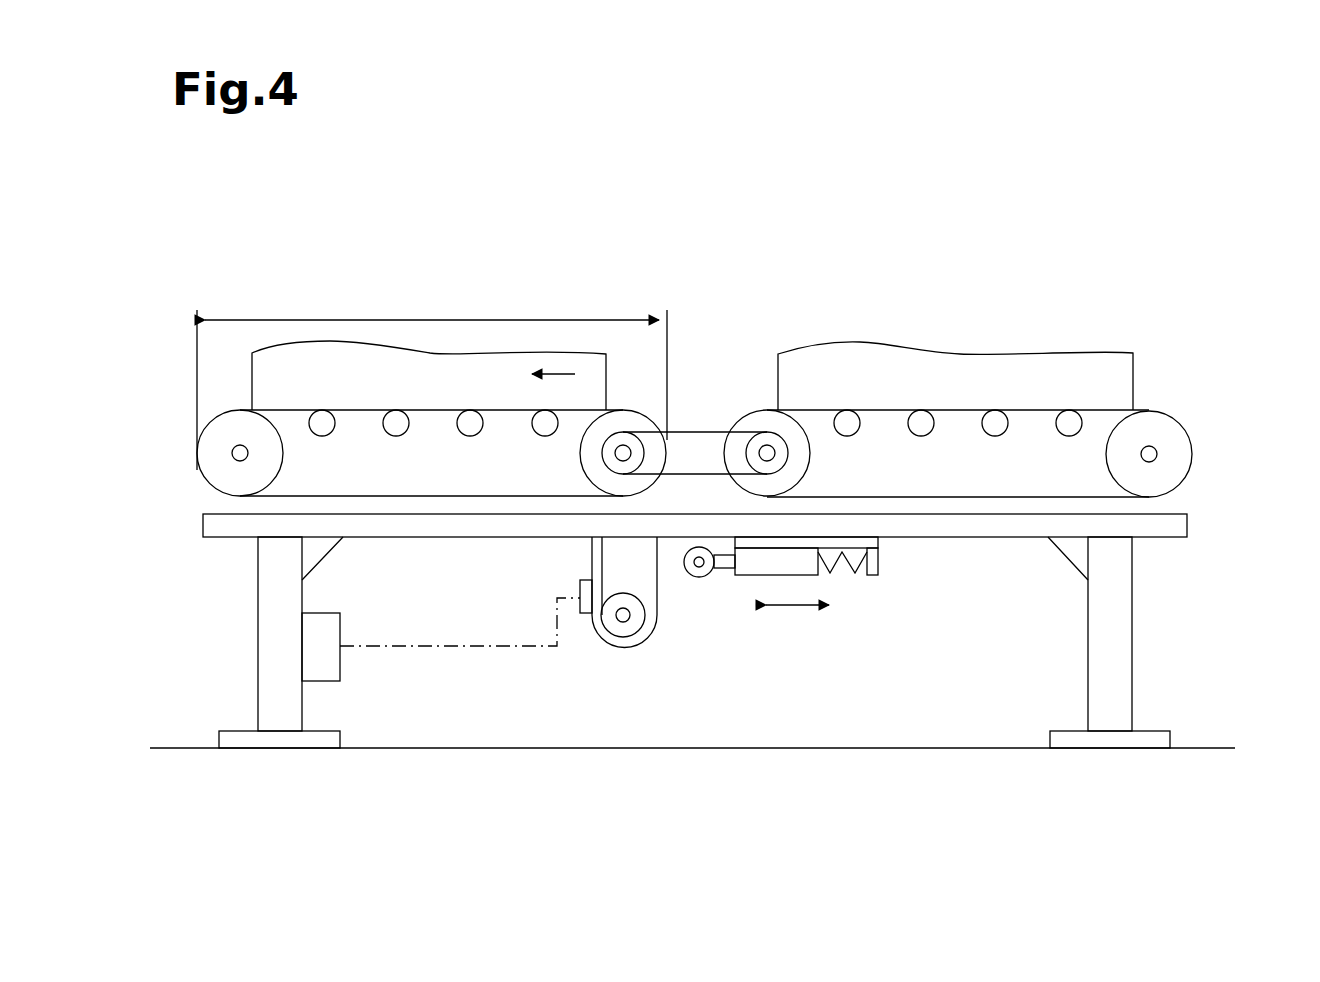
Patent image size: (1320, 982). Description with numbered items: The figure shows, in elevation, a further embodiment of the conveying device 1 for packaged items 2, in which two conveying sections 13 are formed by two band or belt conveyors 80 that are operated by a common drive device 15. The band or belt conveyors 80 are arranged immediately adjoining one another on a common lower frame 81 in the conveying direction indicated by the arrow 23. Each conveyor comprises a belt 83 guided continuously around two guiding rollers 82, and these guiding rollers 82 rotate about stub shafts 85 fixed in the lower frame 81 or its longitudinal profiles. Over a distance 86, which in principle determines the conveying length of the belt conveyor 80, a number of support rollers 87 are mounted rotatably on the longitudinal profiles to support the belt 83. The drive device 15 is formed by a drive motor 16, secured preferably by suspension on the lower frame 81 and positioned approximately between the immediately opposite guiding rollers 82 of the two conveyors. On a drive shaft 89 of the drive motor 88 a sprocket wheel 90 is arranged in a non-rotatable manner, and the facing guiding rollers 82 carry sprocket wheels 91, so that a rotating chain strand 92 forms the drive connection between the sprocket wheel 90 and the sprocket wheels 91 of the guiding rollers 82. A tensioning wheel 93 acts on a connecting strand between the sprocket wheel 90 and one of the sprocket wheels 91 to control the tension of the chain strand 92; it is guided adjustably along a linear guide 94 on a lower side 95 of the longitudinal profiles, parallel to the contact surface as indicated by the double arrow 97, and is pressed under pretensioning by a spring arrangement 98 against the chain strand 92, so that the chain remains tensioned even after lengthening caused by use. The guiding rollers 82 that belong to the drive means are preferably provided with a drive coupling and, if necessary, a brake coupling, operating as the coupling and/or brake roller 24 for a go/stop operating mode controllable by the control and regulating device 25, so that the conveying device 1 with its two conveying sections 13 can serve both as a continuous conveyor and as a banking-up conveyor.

The conveying device 1 is at (812, 218).
The packaged items 2 is at (278, 375).
The conveying sections 13 is at (433, 233).
The drive device 15 is at (590, 648).
The drive motor 16 is at (623, 637).
The arrow 23 is at (562, 374).
The coupling and/or brake roller 24 is at (650, 400).
The control and regulating device 25 is at (330, 658).
The band or belt conveyor 80 is at (480, 380).
The lower frame 81 is at (205, 645).
The guiding rollers 82 is at (622, 392).
The belt 83 is at (203, 512).
The stub shafts 85 is at (1160, 453).
The distance 86 is at (318, 318).
The support rollers 87 is at (322, 412).
The drive motor 88 is at (626, 622).
The drive shaft 89 is at (640, 640).
The sprocket wheel 90 is at (611, 628).
The sprocket wheels 91 is at (637, 640).
The chain strand 92 is at (598, 555).
The tensioning wheel 93 is at (705, 572).
The linear guide 94 is at (872, 545).
The lower side 95 is at (1197, 745).
The double arrow 97 is at (797, 610).
The spring 98 is at (865, 590).